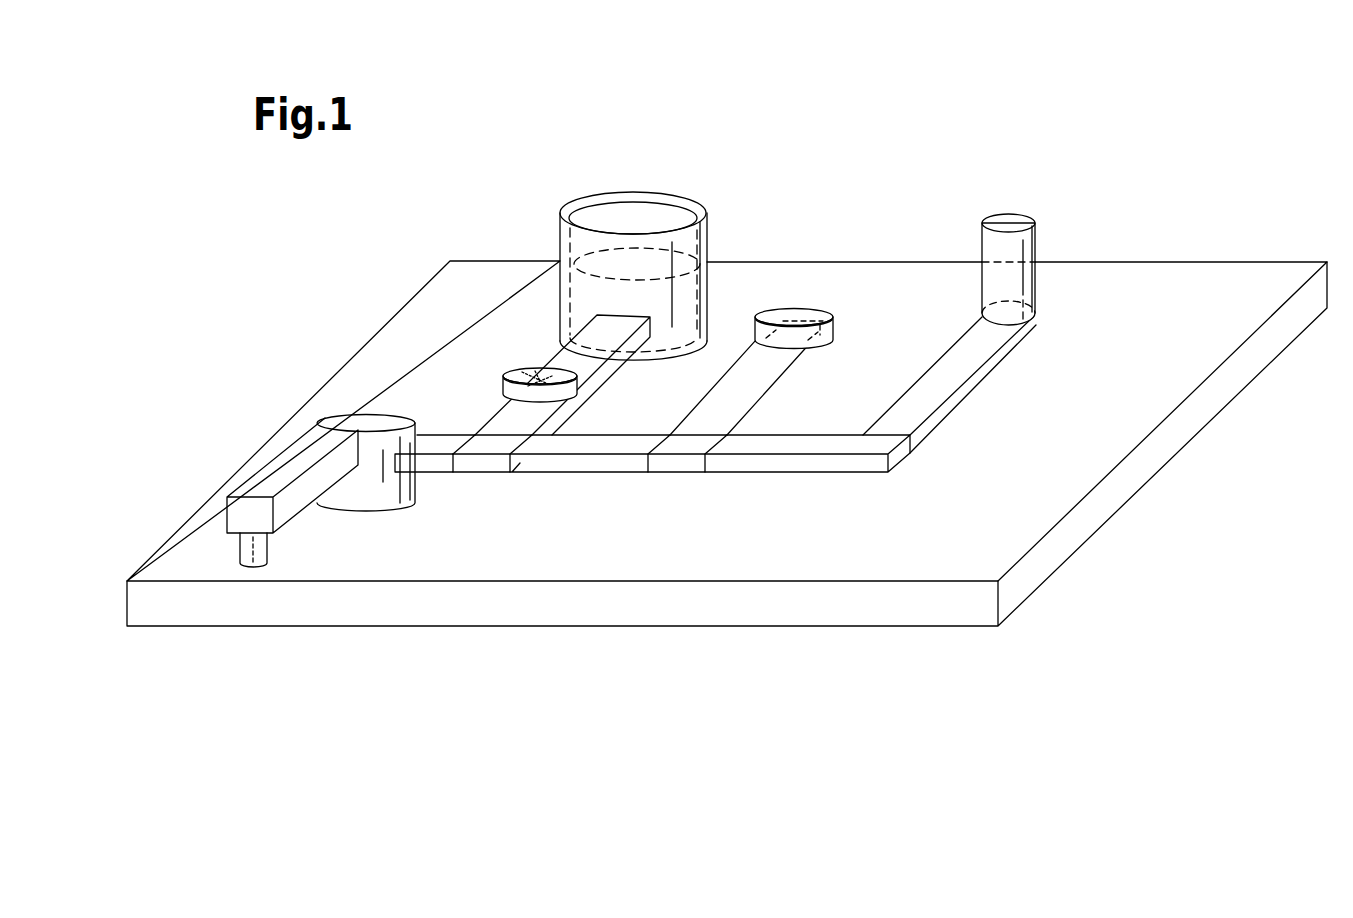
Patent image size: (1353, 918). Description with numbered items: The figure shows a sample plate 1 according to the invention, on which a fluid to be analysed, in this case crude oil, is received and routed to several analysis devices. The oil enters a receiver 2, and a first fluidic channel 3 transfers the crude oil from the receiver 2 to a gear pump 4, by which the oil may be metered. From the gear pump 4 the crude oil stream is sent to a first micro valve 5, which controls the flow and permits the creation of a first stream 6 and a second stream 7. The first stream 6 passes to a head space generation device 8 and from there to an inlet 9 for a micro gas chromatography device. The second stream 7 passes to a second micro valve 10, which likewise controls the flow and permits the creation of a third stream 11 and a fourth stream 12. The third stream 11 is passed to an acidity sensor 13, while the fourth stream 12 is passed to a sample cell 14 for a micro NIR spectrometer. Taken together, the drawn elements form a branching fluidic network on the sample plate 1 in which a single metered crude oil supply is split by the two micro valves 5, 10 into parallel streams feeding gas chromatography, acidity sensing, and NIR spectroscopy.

The sample plate 1 is at (420, 364).
The receiver 2 is at (634, 212).
The first fluidic channel 3 is at (527, 373).
The gear pump 4 is at (575, 360).
The first micro valve 5 is at (477, 463).
The first stream 6 is at (428, 463).
The second stream 7 is at (583, 463).
The head space generation device 8 is at (367, 422).
The inlet for a micro gas chromatography device 9 is at (243, 548).
The second micro valve 10 is at (677, 463).
The third stream 11 is at (743, 392).
The fourth stream 12 is at (930, 392).
The acidity sensor 13 is at (797, 308).
The sample cell 14 is at (1013, 285).